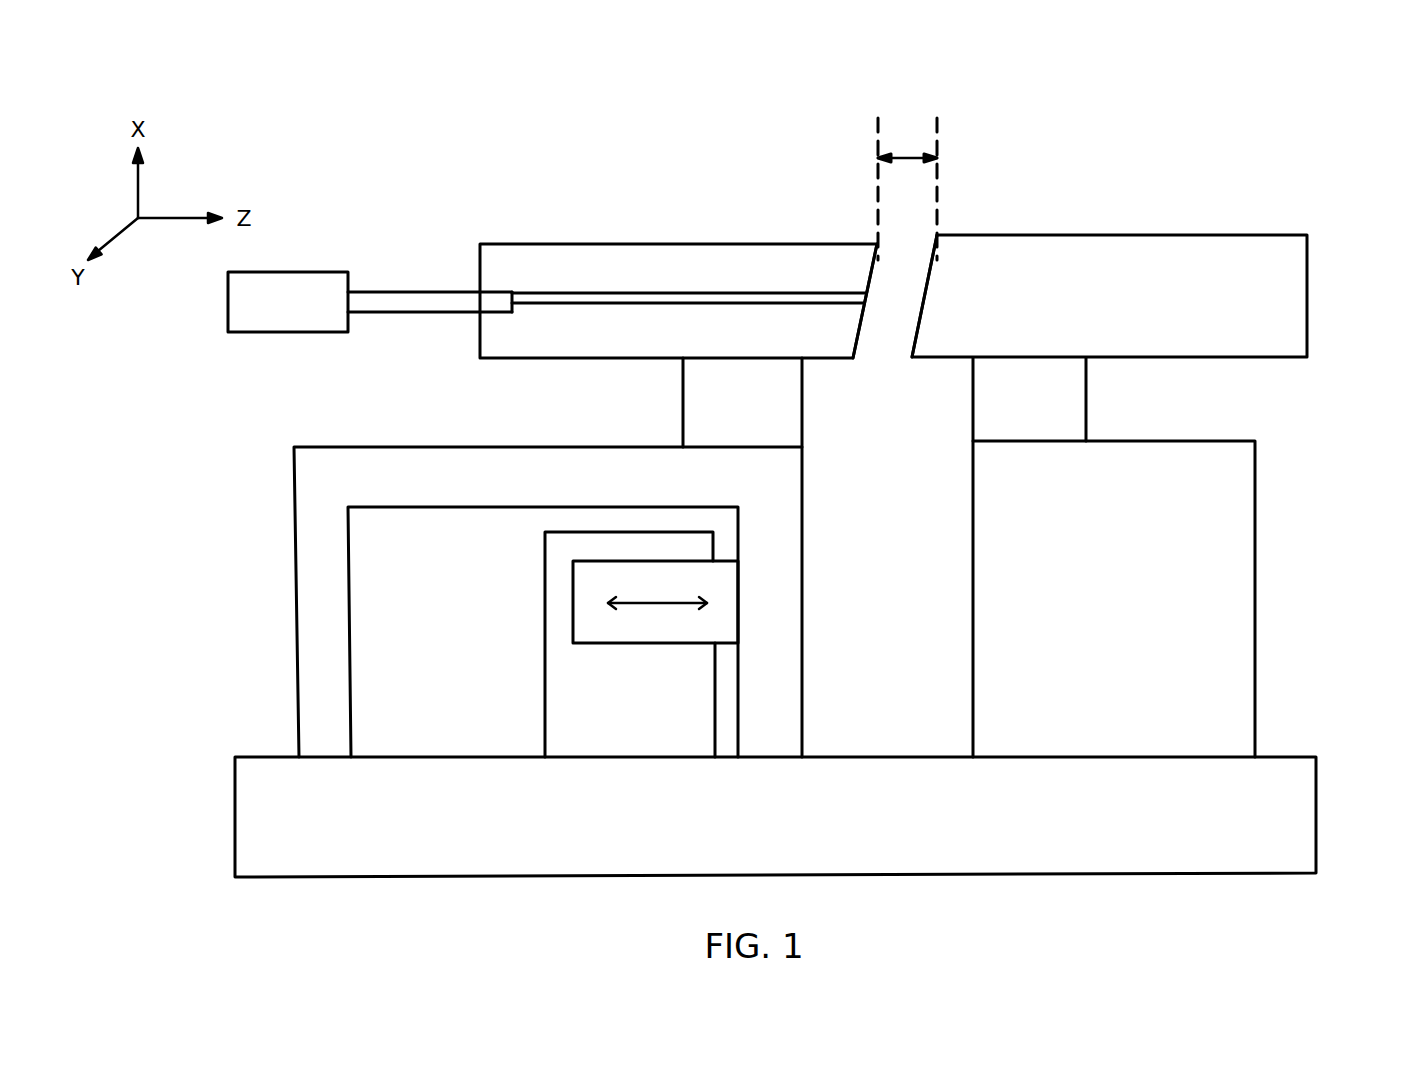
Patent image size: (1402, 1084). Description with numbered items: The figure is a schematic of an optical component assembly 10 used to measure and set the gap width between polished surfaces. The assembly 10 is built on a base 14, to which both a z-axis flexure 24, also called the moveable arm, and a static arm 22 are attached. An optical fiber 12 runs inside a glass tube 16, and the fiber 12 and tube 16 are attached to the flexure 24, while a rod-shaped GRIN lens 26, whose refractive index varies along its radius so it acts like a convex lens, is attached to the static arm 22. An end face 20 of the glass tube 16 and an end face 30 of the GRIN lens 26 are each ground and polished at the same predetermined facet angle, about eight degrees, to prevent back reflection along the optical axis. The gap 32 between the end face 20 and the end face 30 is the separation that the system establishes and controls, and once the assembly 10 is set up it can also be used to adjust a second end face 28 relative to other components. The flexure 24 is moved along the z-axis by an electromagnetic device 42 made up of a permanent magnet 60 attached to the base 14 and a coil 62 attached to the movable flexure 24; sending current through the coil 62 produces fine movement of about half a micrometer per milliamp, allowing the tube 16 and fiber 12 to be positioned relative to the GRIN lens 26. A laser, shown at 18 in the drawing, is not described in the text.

The optical component assembly 10 is at (1196, 184).
The optical fiber 12 is at (392, 290).
The base 14 is at (235, 847).
The glass tube 16 is at (597, 244).
The laser 18 is at (257, 332).
The end face 20 is at (859, 338).
The static arm 22 is at (1257, 528).
The flexure 24 is at (294, 558).
The GRIN lens 26 is at (1227, 357).
The second end face 28 is at (1307, 282).
The end face 30 is at (918, 332).
The gap 32 is at (902, 153).
The electromagnetic device 42 is at (574, 644).
The permanent magnet 60 is at (545, 700).
The coil 62 is at (602, 645).